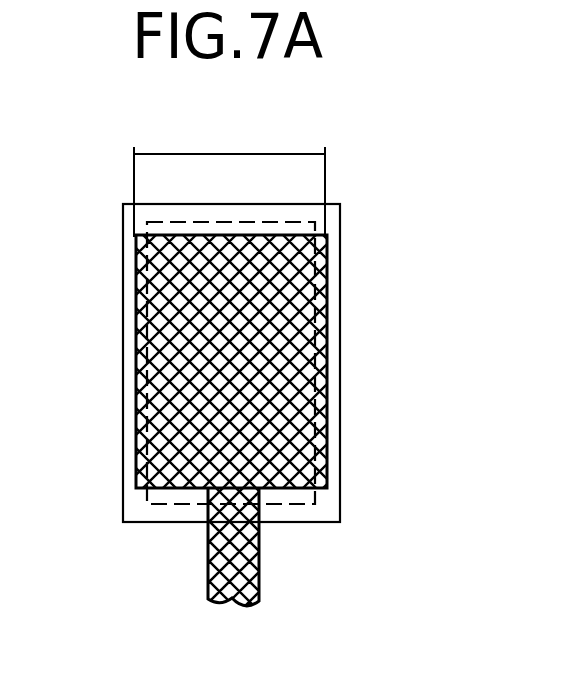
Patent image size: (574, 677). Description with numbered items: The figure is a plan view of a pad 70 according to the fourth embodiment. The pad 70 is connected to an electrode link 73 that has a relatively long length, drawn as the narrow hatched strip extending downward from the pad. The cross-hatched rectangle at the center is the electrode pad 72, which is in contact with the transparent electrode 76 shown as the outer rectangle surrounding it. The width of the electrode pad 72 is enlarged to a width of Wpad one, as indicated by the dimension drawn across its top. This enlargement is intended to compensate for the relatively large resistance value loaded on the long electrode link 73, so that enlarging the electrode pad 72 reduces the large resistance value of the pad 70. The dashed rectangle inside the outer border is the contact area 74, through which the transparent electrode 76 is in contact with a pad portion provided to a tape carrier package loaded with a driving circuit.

The pad 70 is at (355, 176).
The electrode pad 72 is at (300, 412).
The electrode link 73 is at (259, 553).
The contact area 74 is at (132, 508).
The transparent electrode 76 is at (136, 413).